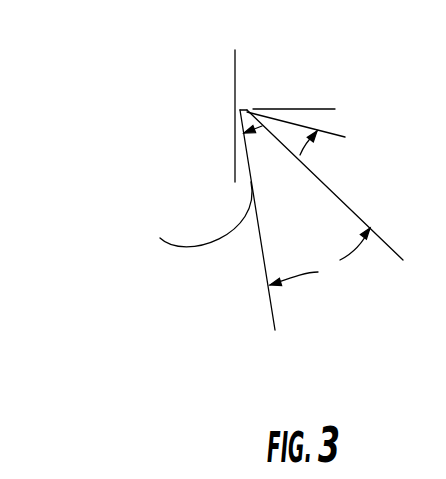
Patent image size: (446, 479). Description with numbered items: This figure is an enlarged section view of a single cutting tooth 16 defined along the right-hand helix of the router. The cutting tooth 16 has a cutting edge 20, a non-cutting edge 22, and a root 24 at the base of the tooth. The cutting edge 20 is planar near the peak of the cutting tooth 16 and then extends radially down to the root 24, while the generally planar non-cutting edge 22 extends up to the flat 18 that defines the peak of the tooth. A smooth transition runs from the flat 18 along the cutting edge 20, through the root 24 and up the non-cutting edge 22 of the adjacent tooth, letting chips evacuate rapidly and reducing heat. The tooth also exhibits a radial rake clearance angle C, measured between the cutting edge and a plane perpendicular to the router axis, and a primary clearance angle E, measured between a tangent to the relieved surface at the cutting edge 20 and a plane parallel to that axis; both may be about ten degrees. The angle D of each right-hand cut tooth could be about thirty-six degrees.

The cutting tooth 16 is at (98, 137).
The flat 18 is at (240, 107).
The cutting edge 20 is at (235, 160).
The non-cutting edge 22 is at (322, 178).
The root 24 is at (217, 237).
The radial rake clearance angle C is at (235, 133).
The angle D is at (320, 257).
The primary clearance angle E is at (320, 107).